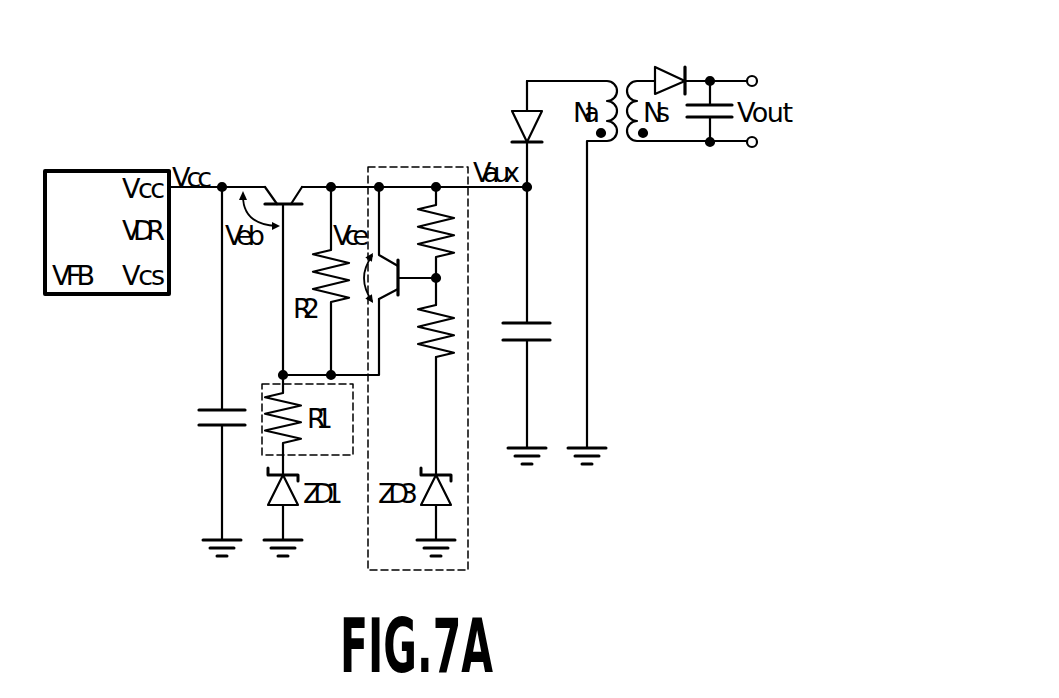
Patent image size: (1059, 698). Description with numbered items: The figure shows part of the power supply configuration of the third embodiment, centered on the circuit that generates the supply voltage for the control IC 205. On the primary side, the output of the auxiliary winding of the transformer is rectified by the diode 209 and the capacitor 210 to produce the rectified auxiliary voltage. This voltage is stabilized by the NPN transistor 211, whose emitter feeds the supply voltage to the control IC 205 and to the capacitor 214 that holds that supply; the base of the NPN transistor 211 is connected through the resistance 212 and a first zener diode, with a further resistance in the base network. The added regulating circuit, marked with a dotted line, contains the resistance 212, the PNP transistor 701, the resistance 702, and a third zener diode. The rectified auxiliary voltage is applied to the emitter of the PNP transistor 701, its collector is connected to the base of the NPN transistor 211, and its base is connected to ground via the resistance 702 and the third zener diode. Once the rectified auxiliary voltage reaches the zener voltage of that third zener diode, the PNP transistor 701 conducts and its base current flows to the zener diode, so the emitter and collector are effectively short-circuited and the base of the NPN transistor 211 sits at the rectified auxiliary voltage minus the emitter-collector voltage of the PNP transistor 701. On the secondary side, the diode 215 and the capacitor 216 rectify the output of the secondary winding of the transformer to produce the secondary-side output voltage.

The control IC 205 is at (93, 170).
The NPN transistor 211 is at (272, 193).
The resistance 212 is at (426, 207).
The Vcc capacitor 214 is at (207, 410).
The diode 209 is at (512, 119).
The capacitor 210 is at (512, 341).
The diode 215 is at (663, 67).
The capacitor 216 is at (720, 103).
The PNP transistor 701 is at (390, 262).
The resistance 702 is at (420, 354).